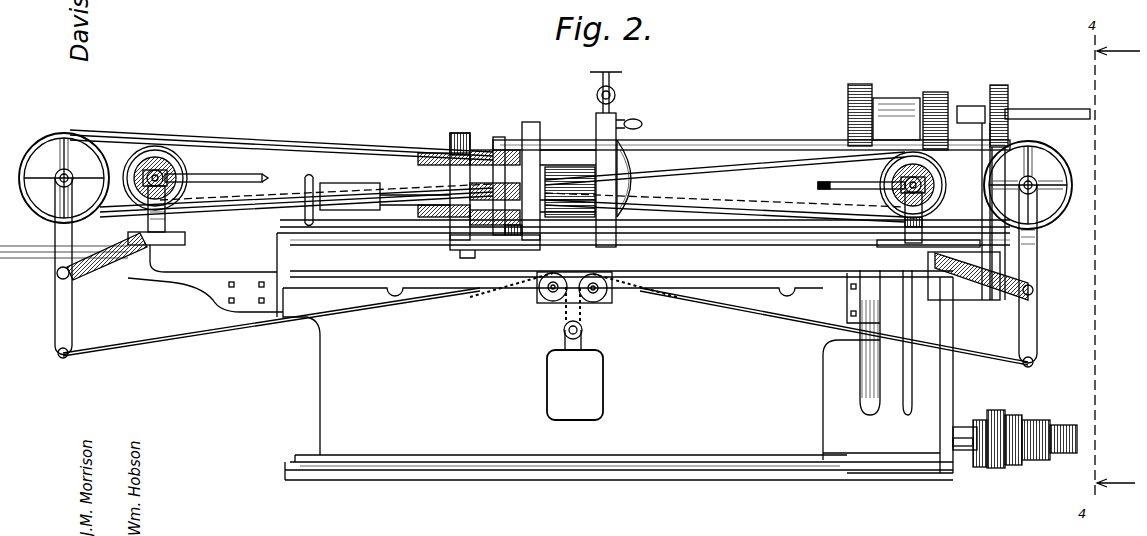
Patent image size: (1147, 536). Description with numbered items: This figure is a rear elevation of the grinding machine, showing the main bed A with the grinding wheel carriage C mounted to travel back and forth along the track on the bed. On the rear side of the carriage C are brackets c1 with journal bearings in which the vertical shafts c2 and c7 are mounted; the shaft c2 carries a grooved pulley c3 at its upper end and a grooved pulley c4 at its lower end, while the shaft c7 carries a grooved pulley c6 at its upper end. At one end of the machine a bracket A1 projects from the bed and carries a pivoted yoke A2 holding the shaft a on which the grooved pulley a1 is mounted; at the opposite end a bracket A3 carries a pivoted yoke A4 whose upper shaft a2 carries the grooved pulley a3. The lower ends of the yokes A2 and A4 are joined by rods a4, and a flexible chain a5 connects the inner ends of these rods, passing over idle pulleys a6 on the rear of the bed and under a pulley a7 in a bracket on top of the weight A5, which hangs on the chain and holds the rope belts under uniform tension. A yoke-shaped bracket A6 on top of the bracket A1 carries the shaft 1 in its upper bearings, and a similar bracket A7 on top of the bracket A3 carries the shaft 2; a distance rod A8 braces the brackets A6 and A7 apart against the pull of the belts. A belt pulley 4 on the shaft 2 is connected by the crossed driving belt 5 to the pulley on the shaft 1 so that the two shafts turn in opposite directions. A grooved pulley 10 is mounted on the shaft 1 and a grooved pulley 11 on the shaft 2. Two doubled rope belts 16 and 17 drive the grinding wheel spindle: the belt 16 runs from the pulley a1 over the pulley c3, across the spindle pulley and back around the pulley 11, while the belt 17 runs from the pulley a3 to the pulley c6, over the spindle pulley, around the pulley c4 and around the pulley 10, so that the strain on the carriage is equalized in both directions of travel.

The main bed A is at (618, 375).
The bracket A1 is at (969, 192).
The pivoted yoke A2 is at (1037, 262).
The bracket A3 is at (196, 292).
The pivoted yoke A4 is at (58, 251).
The weight A5 is at (575, 385).
The yoke-shaped bracket A6 is at (872, 238).
The yoke-shaped bracket A7 is at (170, 214).
The distance rod A8 is at (818, 186).
The grinding wheel carriage C is at (643, 268).
The shaft a is at (1038, 185).
The grooved pulley a1 is at (1050, 160).
The shaft a2 is at (68, 172).
The grooved pulley a3 is at (45, 128).
The rods a4 is at (240, 326).
The flexible chain a5 is at (474, 297).
The idle pulleys a6 is at (551, 300).
The pulley a7 is at (585, 335).
The bracket c1 is at (446, 226).
The vertical shaft c2 is at (535, 125).
The grooved pulley c3 is at (505, 135).
The grooved pulley c4 is at (516, 230).
The grooved pulley c6 is at (436, 156).
The vertical shaft c7 is at (460, 135).
The shaft 1 is at (926, 195).
The shaft 2 is at (135, 190).
The belt pulley 4 is at (180, 173).
The driving belt 5 is at (700, 175).
The grooved pulley 10 is at (903, 152).
The grooved pulley 11 is at (133, 170).
The rope belt 16 is at (712, 143).
The rope belt 17 is at (95, 134).